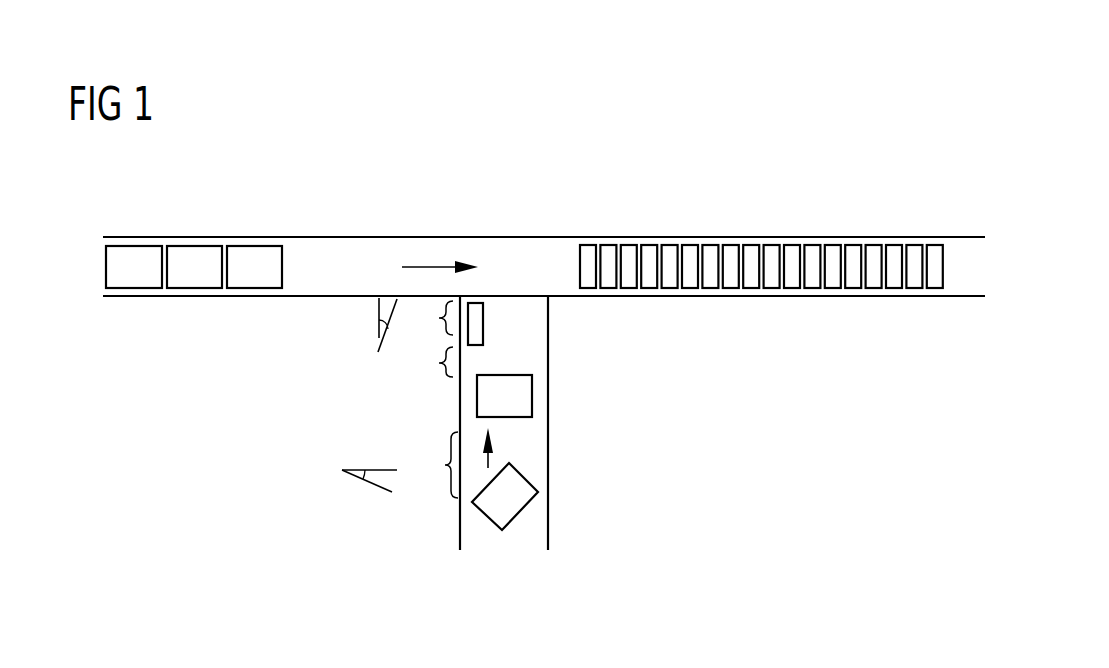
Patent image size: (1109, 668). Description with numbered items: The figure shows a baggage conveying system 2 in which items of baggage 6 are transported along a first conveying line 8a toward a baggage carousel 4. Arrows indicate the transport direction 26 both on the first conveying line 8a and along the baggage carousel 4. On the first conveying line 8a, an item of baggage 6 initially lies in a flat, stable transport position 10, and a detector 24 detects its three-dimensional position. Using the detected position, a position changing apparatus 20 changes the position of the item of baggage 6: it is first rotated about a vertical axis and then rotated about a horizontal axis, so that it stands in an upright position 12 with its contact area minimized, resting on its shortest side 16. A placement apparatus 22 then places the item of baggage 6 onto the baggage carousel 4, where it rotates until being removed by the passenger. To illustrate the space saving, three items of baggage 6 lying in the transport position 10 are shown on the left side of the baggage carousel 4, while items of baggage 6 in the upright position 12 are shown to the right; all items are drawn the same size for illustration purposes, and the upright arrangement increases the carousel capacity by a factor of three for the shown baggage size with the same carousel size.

The baggage conveying system 2 is at (184, 201).
The baggage carousel 4 is at (97, 237).
The item of baggage 6 is at (524, 350).
The first conveying line 8a is at (485, 537).
The transport position 10 is at (250, 297).
The upright position 12 is at (608, 245).
The shortest side of an item of baggage 16 is at (475, 345).
The position changing apparatus 20 is at (432, 421).
The placement apparatus 22 is at (430, 320).
The detector 24 is at (378, 352).
The transport direction 26 is at (430, 267).